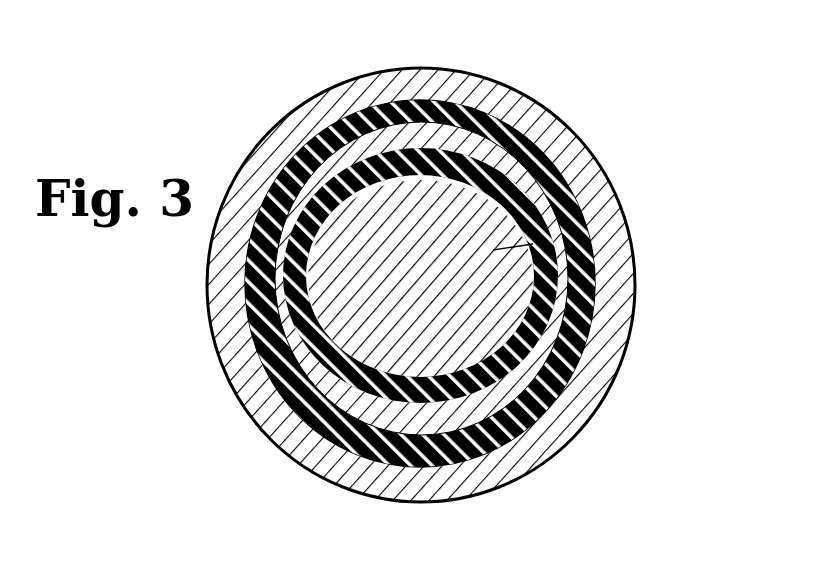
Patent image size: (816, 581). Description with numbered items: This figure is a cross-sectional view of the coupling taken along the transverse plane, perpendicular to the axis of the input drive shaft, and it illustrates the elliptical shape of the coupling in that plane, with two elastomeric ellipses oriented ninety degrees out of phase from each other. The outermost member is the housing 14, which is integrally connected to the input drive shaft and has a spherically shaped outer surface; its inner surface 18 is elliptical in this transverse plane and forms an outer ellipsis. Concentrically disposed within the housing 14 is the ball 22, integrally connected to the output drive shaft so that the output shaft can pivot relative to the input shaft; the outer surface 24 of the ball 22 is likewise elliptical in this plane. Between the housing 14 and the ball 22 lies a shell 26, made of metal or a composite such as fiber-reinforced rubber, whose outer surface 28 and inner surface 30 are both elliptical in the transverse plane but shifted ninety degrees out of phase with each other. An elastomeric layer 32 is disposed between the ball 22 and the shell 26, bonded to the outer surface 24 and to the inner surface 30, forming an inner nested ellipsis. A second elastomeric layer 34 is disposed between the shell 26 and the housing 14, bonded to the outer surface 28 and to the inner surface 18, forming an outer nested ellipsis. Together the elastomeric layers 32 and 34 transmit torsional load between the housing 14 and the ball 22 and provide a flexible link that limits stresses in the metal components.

The housing 14 is at (542, 457).
The inner surface 18 is at (565, 375).
The ball 22 is at (593, 232).
The outer surface 24 is at (543, 107).
The shell 26 is at (488, 107).
The outer surface 28 is at (303, 202).
The inner surface 30 is at (367, 172).
The elastomeric layer 32 is at (570, 277).
The second elastomeric layer 34 is at (387, 97).